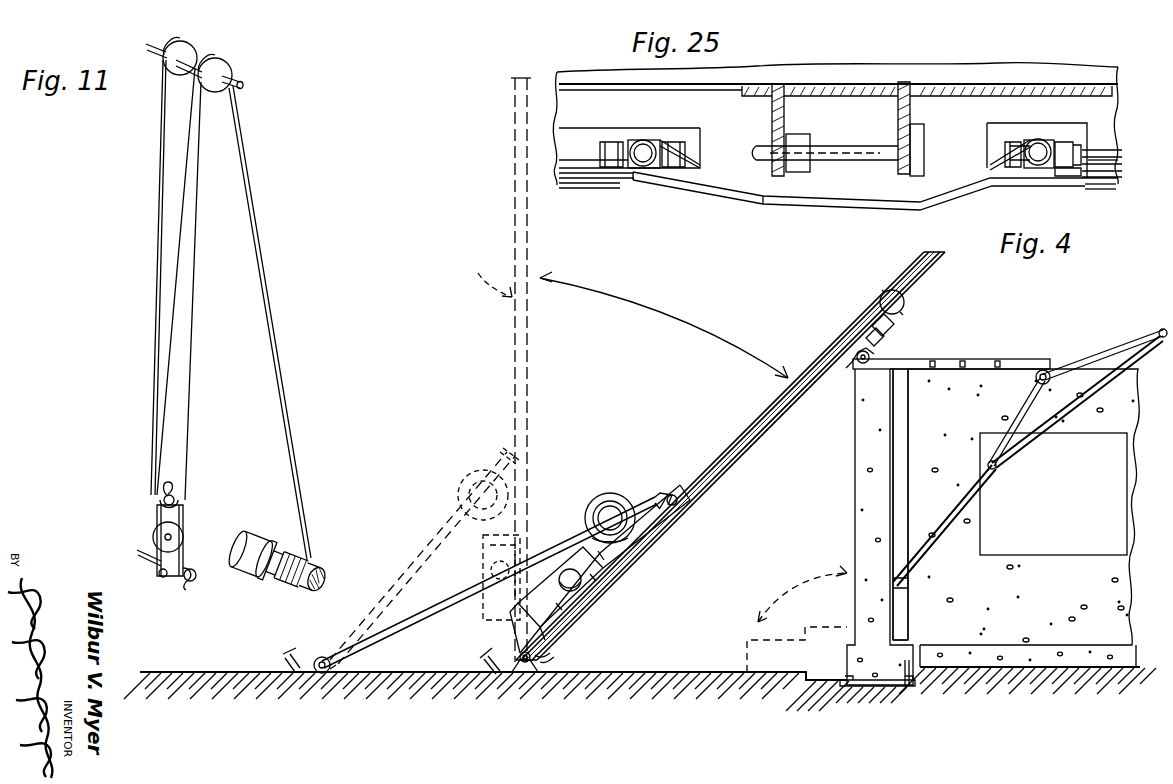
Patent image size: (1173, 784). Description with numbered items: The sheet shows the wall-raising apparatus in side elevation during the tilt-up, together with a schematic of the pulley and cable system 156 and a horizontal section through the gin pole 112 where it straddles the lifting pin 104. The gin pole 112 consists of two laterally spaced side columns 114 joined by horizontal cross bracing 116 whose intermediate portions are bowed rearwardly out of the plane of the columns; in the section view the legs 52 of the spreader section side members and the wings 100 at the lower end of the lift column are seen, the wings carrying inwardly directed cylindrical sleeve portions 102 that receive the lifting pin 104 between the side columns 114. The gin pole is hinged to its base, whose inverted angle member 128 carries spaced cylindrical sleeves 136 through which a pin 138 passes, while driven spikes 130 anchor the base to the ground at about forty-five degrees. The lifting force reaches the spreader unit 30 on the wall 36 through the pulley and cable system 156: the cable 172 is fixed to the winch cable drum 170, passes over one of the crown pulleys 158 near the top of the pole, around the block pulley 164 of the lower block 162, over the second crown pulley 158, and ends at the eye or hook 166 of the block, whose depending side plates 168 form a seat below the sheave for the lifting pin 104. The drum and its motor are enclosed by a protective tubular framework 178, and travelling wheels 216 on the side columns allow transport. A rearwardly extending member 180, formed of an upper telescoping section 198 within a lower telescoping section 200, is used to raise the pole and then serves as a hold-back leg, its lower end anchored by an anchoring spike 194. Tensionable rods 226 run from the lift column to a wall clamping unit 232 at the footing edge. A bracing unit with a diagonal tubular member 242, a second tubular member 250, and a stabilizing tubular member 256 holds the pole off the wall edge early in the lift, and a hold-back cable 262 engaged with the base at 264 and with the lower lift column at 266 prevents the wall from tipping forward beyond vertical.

In FIG. 4, the spreader unit 30 is at (986, 351).
In FIG. 4, the wall 36 is at (846, 518).
In FIG. 25, the legs of the section side members 52 is at (904, 84).
In FIG. 25, the wings 100 is at (912, 120).
In FIG. 25, the cylindrical sleeve portions 102 is at (797, 140).
In FIG. 11, the lifting pin 104 is at (187, 584).
In FIG. 25, the lifting pin 104 is at (841, 152).
In FIG. 4, the gin pole 112 is at (713, 458).
In FIG. 25, the side columns 114 is at (1032, 140).
In FIG. 25, the horizontal cross bracing 116 is at (778, 197).
In FIG. 25, the inverted angle member 128 is at (1104, 162).
In FIG. 4, the driven spikes 130 is at (483, 660).
In FIG. 25, the cylindrical sleeves 136 is at (1066, 140).
In FIG. 25, the pin 138 is at (1068, 172).
In FIG. 11, the pulley and cable system 156 is at (296, 283).
In FIG. 11, the crown pulleys 158 is at (196, 52).
In FIG. 4, the crown pulleys 158 is at (903, 299).
In FIG. 11, the lower block 162 is at (192, 528).
In FIG. 4, the lower block 162 is at (904, 333).
In FIG. 11, the block pulley 164 is at (179, 536).
In FIG. 11, the eye or hook 166 is at (175, 496).
In FIG. 11, the side plates 168 is at (160, 578).
In FIG. 11, the winch cable drum 170 is at (316, 564).
In FIG. 11, the cable 172 is at (283, 394).
In FIG. 4, the protective tubular framework 178 is at (541, 563).
In FIG. 4, the rearwardly extending member 180 is at (433, 602).
In FIG. 4, the anchoring spike 194 is at (298, 654).
In FIG. 4, the upper telescoping section 198 is at (572, 522).
In FIG. 4, the lower telescoping section 200 is at (414, 634).
In FIG. 4, the travelling wheels 216 is at (610, 492).
In FIG. 4, the tensionable rods 226 is at (912, 488).
In FIG. 4, the wall clamping unit 232 is at (880, 692).
In FIG. 4, the tubular member 242 is at (1028, 462).
In FIG. 4, the second tubular member 250 is at (1075, 360).
In FIG. 4, the tubular member 256 is at (1098, 393).
In FIG. 4, the hold-back cable 262 is at (724, 528).
In FIG. 4, the base engagement point 264 is at (540, 670).
In FIG. 4, the lift column engagement point 266 is at (854, 362).